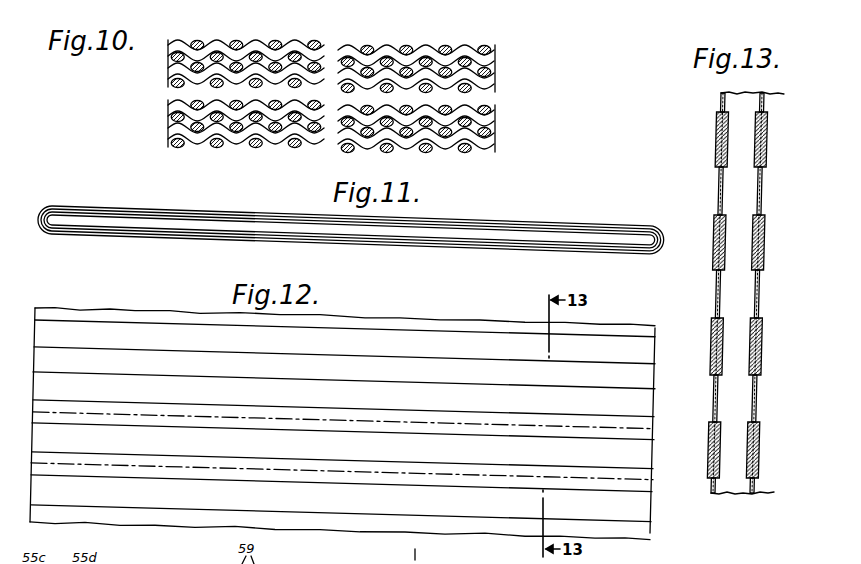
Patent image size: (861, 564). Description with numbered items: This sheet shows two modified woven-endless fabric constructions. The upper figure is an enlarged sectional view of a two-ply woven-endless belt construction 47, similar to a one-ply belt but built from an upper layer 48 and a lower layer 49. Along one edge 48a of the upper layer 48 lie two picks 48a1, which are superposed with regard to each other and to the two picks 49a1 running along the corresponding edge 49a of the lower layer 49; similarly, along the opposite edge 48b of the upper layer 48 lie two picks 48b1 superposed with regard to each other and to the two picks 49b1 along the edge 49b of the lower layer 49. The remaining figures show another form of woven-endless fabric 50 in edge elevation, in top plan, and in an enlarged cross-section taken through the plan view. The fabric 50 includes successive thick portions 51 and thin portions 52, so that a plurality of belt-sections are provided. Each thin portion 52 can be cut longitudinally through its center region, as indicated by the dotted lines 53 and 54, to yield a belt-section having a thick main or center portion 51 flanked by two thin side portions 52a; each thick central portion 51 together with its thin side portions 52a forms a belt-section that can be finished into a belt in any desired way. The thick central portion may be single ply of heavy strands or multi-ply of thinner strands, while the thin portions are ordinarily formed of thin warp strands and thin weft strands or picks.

In FIG. 10, the two-ply woven-endless belt construction 47 is at (332, 95).
In FIG. 10, the upper layer 48 is at (230, 52).
In FIG. 10, the edge of the upper layer 48a is at (168, 42).
In FIG. 10, the picks along edge 48a 48a1 is at (168, 58).
In FIG. 10, the opposite edge of the upper layer 48b is at (446, 68).
In FIG. 10, the picks along edge 48b 48b1 is at (497, 56).
In FIG. 10, the lower layer 49 is at (217, 135).
In FIG. 10, the edge of the lower layer 49a is at (168, 108).
In FIG. 10, the picks along edge 49a 49a1 is at (168, 143).
In FIG. 10, the edge of the lower layer 49b is at (446, 129).
In FIG. 10, the picks along edge 49b 49b1 is at (497, 118).
In FIG. 11, the woven-endless fabric 50 is at (350, 241).
In FIG. 12, the woven-endless fabric 50 is at (367, 410).
In FIG. 13, the woven-endless fabric 50 is at (735, 303).
In FIG. 11, the thick portion 51 is at (122, 212).
In FIG. 12, the thick portion 51 is at (90, 323).
In FIG. 13, the thick portion 51 is at (718, 130).
In FIG. 11, the thin portion 52 is at (590, 228).
In FIG. 12, the thin portion 52 is at (342, 415).
In FIG. 13, the thin portion 52 is at (759, 198).
In FIG. 12, the thin side portion 52a is at (650, 466).
In FIG. 12, the dotted line 53 is at (535, 413).
In FIG. 12, the dotted line 54 is at (520, 468).